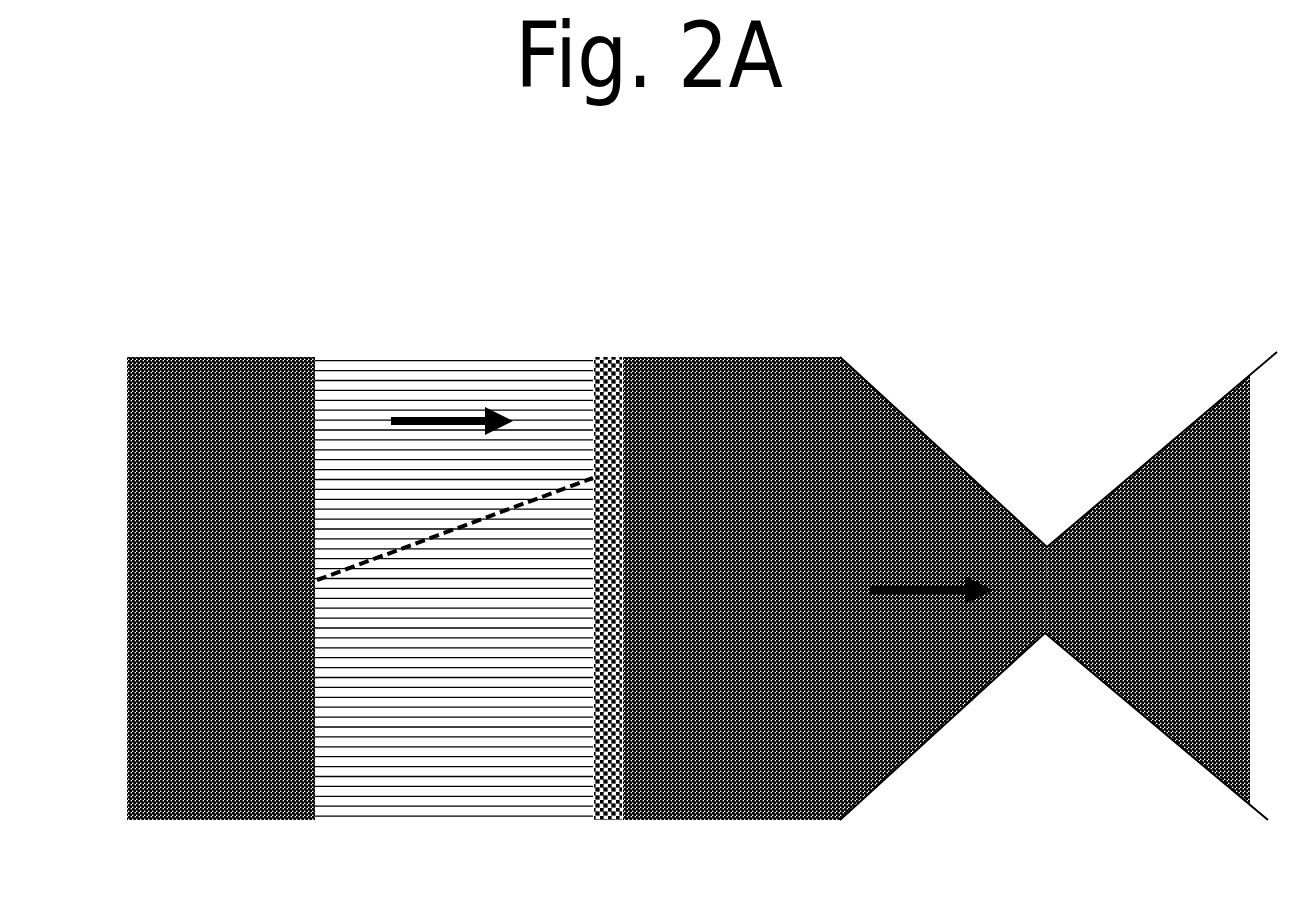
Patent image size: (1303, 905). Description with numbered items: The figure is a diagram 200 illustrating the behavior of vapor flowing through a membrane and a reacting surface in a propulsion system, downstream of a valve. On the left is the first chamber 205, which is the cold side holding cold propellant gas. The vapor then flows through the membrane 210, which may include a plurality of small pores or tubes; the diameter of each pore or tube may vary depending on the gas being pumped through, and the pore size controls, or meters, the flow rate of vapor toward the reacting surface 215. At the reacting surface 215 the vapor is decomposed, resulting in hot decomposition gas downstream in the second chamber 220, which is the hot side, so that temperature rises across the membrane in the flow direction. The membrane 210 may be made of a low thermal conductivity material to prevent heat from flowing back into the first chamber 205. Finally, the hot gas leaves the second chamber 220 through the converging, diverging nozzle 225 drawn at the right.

The diagram 200 is at (150, 221).
The first chamber 205 is at (216, 343).
The membrane 210 is at (423, 343).
The reacting surface 215 is at (610, 343).
The second chamber 220 is at (740, 343).
The converging, diverging nozzle 225 is at (1050, 432).